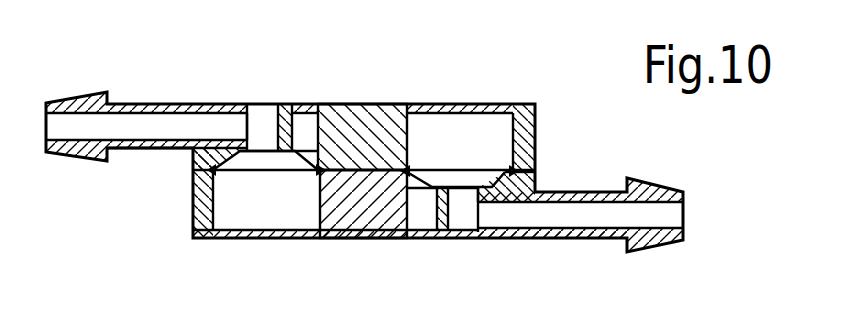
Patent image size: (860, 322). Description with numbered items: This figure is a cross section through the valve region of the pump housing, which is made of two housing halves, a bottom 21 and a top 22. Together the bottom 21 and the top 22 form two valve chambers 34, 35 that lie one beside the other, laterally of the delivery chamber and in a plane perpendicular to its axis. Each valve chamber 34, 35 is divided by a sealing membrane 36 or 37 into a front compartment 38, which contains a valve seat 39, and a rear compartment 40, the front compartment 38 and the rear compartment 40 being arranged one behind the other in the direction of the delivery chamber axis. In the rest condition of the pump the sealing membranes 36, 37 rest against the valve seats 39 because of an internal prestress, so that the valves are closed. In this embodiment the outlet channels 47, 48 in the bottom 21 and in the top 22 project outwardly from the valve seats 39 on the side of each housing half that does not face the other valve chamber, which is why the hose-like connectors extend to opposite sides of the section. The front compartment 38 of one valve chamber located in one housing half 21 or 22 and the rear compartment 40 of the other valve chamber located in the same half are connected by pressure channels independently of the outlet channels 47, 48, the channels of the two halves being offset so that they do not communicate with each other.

The bottom 21 is at (375, 222).
The top 22 is at (363, 123).
The valve chamber 34 is at (483, 140).
The valve chamber 35 is at (255, 200).
The sealing membrane 36 is at (418, 190).
The sealing membrane 37 is at (305, 165).
The front compartment 38 is at (305, 123).
The valve seat 39 is at (275, 130).
The rear compartment 40 is at (438, 127).
The outlet channel 47 is at (608, 218).
The outlet channel 48 is at (146, 120).